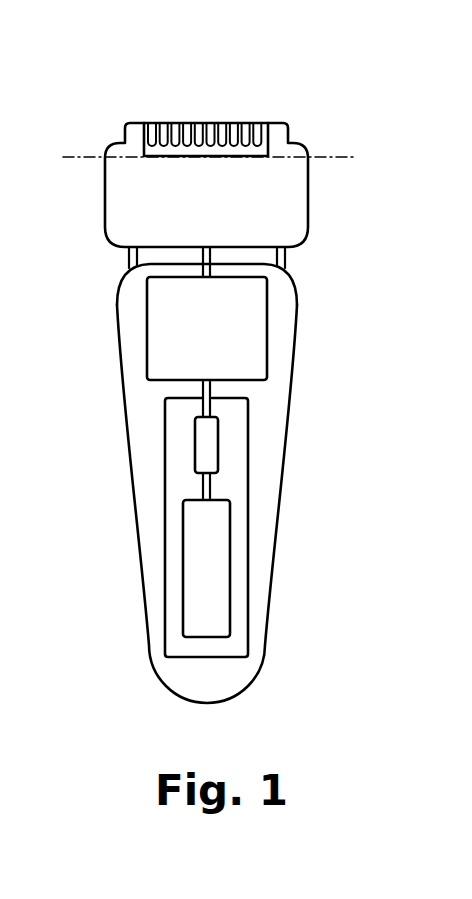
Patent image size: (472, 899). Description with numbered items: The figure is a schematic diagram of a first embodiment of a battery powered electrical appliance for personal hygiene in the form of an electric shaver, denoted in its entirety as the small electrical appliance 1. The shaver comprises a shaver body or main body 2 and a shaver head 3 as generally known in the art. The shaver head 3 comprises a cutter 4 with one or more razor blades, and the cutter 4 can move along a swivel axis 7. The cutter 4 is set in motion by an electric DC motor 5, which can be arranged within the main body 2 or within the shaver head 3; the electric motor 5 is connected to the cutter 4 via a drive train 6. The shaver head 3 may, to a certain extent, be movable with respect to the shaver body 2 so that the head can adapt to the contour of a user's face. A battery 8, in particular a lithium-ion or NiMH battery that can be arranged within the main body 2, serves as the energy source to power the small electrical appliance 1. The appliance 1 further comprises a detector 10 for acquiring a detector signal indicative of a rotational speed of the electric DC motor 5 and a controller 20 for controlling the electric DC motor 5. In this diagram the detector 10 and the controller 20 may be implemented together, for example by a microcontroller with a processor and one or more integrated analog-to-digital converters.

The small electrical appliance 1 is at (316, 78).
The main body 2 is at (145, 418).
The shaver head 3 is at (123, 195).
The cutter 4 is at (270, 130).
The electric DC motor 5 is at (165, 328).
The drive train 6 is at (278, 263).
The swivel axis 7 is at (63, 155).
The battery 8 is at (215, 565).
The detector 10 is at (296, 445).
The controller 20 is at (208, 438).